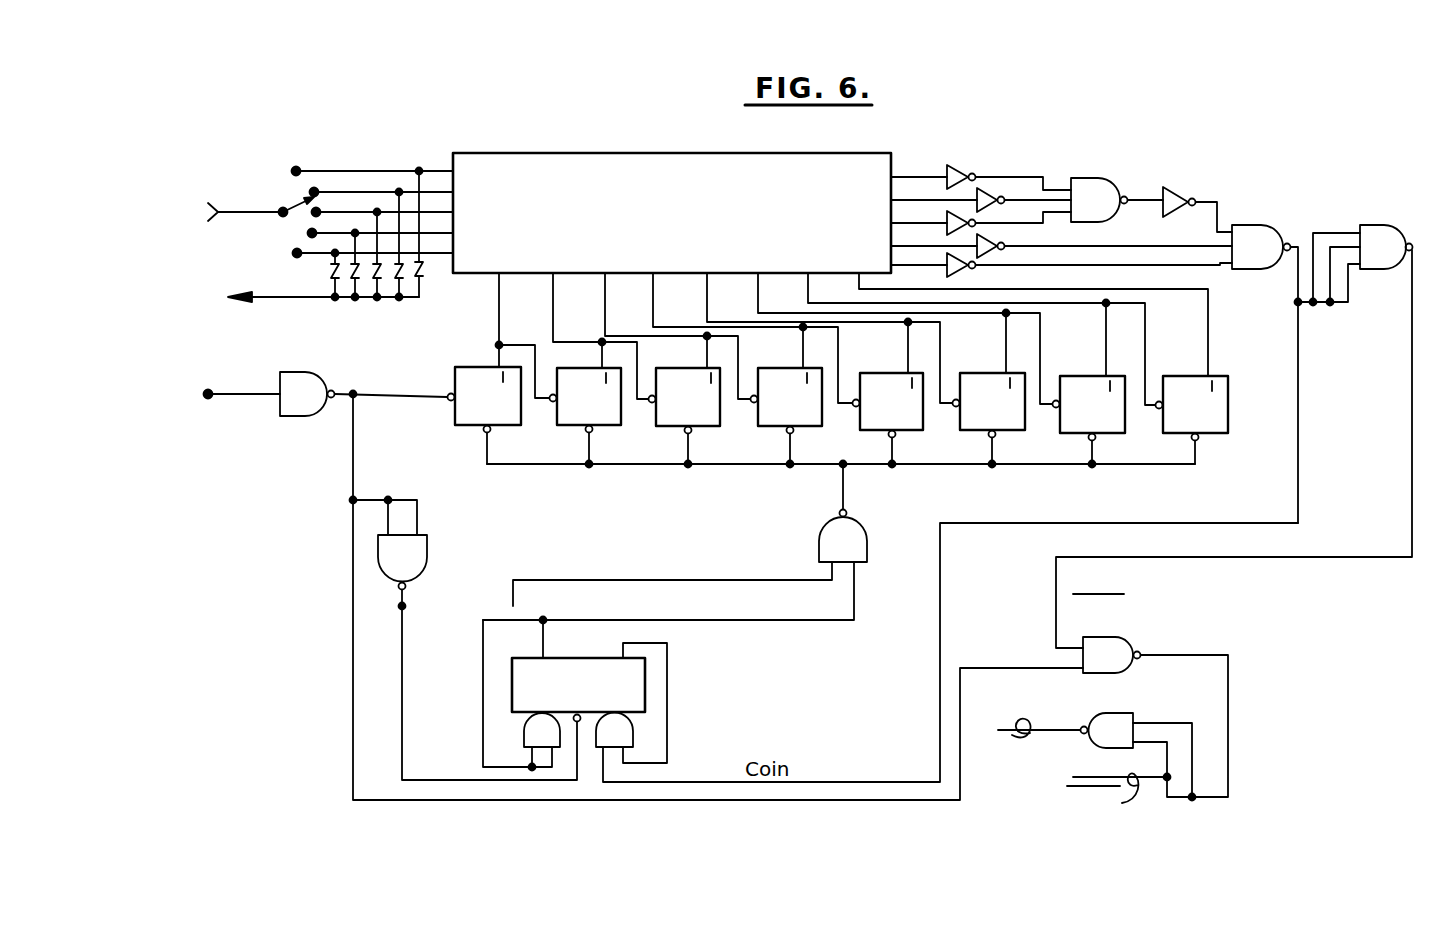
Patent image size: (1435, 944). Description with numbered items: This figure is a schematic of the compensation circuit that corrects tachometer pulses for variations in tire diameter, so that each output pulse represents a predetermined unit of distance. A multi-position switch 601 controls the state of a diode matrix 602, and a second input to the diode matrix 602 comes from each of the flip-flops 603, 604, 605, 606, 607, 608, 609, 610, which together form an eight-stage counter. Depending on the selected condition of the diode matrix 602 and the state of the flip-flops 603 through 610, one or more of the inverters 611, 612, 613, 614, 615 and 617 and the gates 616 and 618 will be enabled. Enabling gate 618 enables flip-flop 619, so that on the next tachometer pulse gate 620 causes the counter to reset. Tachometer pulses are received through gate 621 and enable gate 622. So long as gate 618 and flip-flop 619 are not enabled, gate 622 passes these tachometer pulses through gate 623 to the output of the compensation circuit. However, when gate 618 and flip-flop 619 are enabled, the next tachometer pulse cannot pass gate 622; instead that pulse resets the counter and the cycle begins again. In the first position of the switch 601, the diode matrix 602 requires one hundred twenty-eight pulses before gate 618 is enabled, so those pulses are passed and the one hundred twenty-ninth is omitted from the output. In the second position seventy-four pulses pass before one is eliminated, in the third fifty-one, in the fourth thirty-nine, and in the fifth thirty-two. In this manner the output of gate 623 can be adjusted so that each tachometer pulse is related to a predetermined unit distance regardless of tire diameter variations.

The multi-position switch 601 is at (289, 198).
The diode matrix 602 is at (830, 264).
The flip-flop 603 is at (499, 403).
The flip-flop 604 is at (599, 403).
The flip-flop 605 is at (700, 400).
The flip-flop 606 is at (802, 396).
The flip-flop 607 is at (903, 393).
The flip-flop 608 is at (1003, 389).
The flip-flop 609 is at (1104, 384).
The flip-flop 610 is at (1192, 420).
The inverter 611 is at (957, 167).
The inverter 612 is at (987, 203).
The inverter 613 is at (948, 219).
The inverter 614 is at (990, 244).
The inverter 615 is at (948, 265).
The gate 616 is at (1117, 200).
The inverter 617 is at (1173, 198).
The gate 618 is at (1296, 374).
The flip-flop 619 is at (907, 503).
The gate 620 is at (675, 542).
The gate 621 is at (584, 579).
The gate 622 is at (1150, 697).
The gate 623 is at (1085, 744).